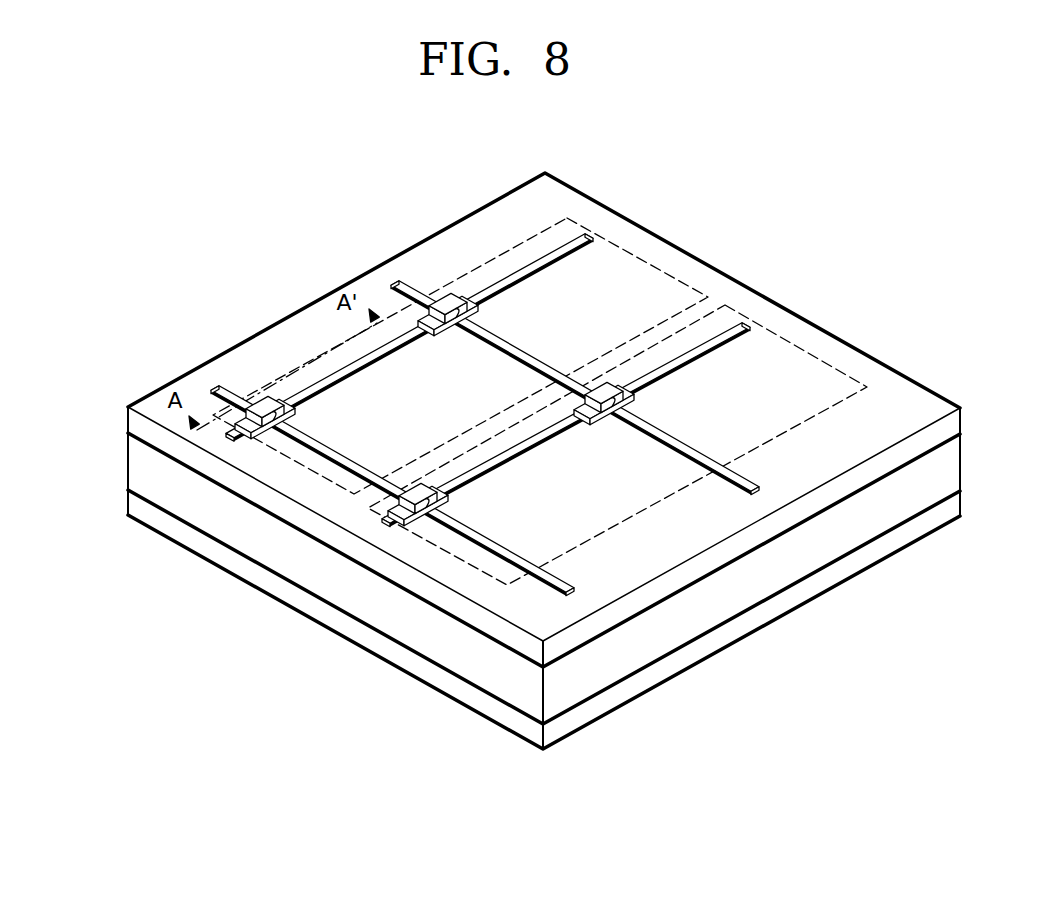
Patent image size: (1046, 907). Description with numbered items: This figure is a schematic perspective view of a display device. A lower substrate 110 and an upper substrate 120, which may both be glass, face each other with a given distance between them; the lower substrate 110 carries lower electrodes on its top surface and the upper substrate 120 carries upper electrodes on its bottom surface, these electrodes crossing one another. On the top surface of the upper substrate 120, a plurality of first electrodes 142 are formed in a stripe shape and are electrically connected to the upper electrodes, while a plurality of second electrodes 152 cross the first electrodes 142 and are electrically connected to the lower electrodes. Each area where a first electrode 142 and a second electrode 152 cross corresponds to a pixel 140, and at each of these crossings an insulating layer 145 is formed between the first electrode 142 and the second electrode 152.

The lower substrate 110 is at (134, 505).
The upper substrate 120 is at (134, 422).
The pixel 140 is at (643, 252).
The first electrode 142 is at (318, 451).
The insulating layer 145 is at (253, 437).
The second electrode 152 is at (320, 381).